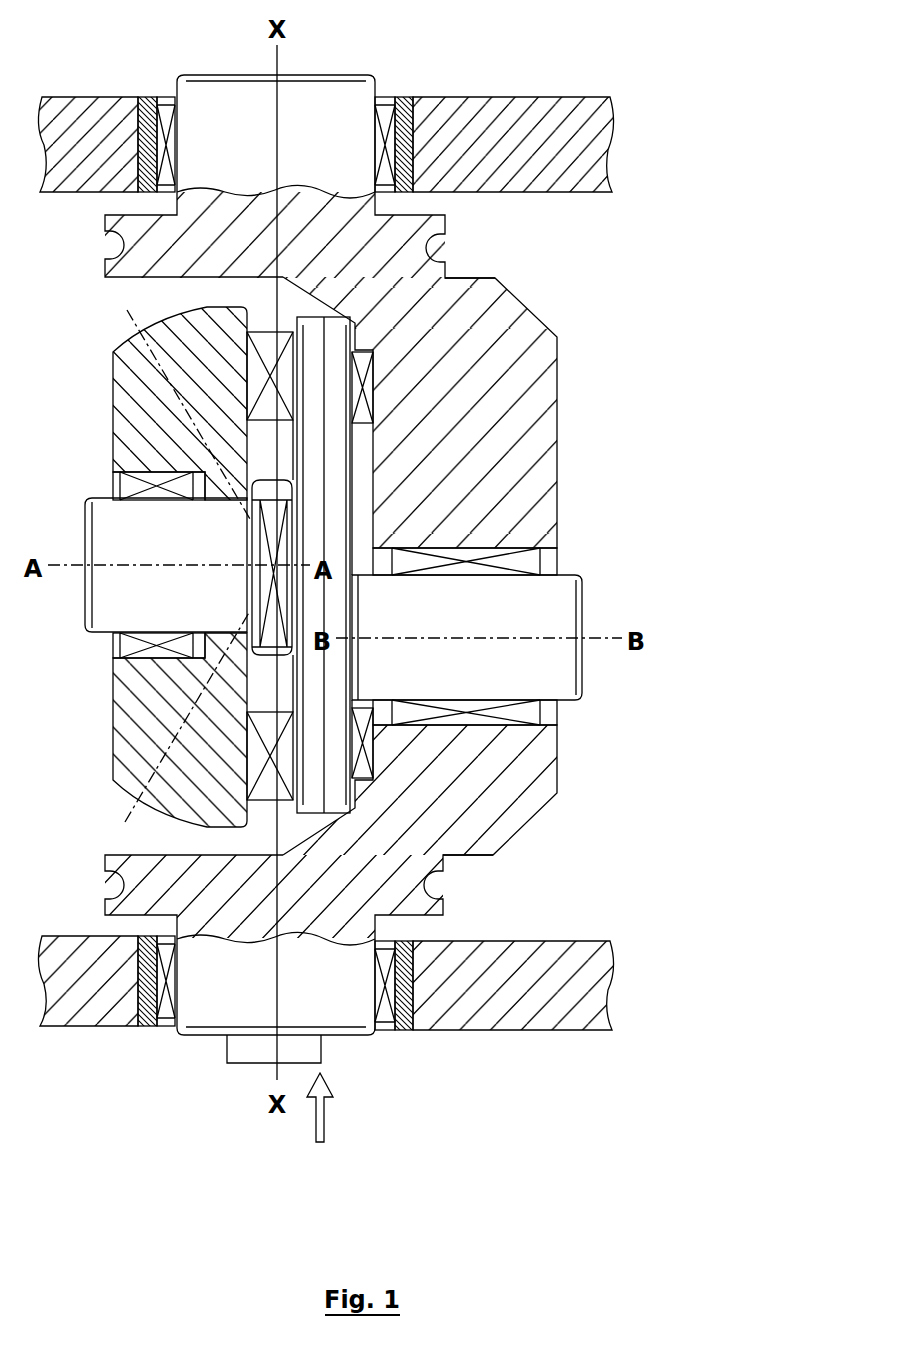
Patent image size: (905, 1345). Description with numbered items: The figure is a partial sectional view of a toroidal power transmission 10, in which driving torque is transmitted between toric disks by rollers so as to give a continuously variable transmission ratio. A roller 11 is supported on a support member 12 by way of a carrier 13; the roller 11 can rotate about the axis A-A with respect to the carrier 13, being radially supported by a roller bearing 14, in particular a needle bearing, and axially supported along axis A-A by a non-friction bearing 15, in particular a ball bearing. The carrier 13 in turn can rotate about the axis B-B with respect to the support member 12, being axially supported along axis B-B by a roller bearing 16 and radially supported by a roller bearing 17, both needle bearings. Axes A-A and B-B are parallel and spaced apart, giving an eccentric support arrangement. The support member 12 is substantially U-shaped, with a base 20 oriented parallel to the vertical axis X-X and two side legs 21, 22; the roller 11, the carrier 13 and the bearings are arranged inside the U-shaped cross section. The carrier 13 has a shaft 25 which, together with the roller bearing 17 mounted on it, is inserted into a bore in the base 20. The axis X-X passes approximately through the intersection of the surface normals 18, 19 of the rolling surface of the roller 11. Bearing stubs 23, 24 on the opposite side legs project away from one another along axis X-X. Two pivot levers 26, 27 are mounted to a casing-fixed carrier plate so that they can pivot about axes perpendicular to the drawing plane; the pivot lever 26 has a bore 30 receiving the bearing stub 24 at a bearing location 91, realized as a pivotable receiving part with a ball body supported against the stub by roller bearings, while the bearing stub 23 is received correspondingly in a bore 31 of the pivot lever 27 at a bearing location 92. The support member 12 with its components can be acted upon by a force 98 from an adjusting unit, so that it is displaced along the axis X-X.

The toroidal power transmission 10 is at (510, 74).
The roller 11 is at (140, 415).
The support member 12 is at (500, 410).
The carrier 13 is at (333, 487).
The roller bearing 14 is at (120, 483).
The non-friction bearing 15 is at (257, 763).
The roller bearing 16 is at (368, 753).
The roller bearing 17 is at (530, 565).
The surface normal 18 is at (128, 322).
The surface normal 19 is at (128, 812).
The base 20 is at (490, 808).
The side leg 21 is at (345, 243).
The side leg 22 is at (432, 885).
The bearing stub 23 is at (323, 1015).
The bearing stub 24 is at (322, 96).
The shaft 25 is at (548, 665).
The pivot lever 26 is at (578, 160).
The pivot lever 27 is at (558, 1000).
The bore 30 is at (134, 145).
The bore 31 is at (130, 972).
The bearing location 91 is at (157, 96).
The bearing location 92 is at (155, 1034).
The force 98 is at (324, 1118).